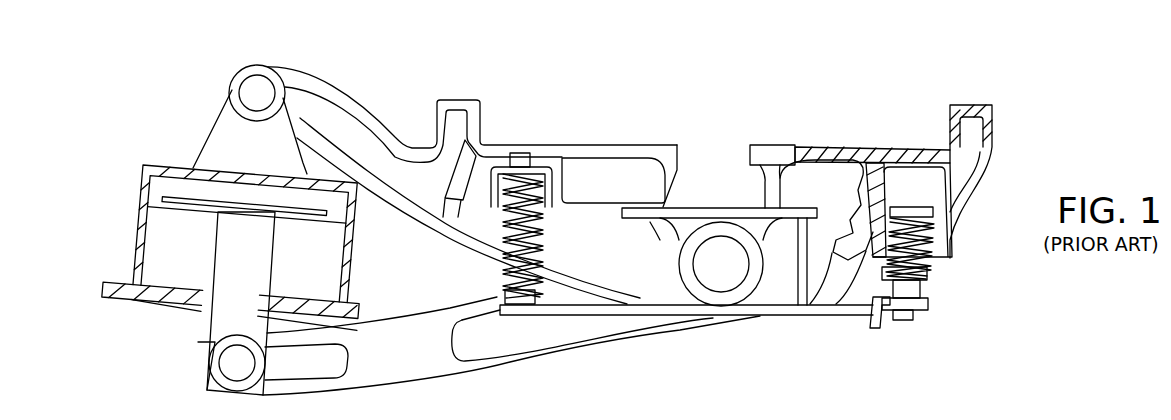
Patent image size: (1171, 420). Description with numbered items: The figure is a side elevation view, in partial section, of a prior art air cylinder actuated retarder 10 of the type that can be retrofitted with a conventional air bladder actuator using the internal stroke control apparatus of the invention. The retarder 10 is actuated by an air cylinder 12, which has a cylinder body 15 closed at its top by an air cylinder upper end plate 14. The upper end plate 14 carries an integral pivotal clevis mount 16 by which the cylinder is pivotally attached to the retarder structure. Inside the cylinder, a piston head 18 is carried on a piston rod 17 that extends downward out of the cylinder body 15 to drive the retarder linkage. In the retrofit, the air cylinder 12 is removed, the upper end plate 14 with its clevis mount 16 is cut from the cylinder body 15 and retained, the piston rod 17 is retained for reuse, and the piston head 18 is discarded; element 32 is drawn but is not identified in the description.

The air cylinder actuated retarder 10 is at (378, 100).
The air cylinder 12 is at (140, 204).
The air cylinder upper end plate 14 is at (180, 166).
The cylinder body 15 is at (140, 258).
The pivotal clevis mount 16 is at (247, 75).
The piston rod 17 is at (263, 258).
The piston head 18 is at (180, 208).
The base flange 32 is at (150, 295).